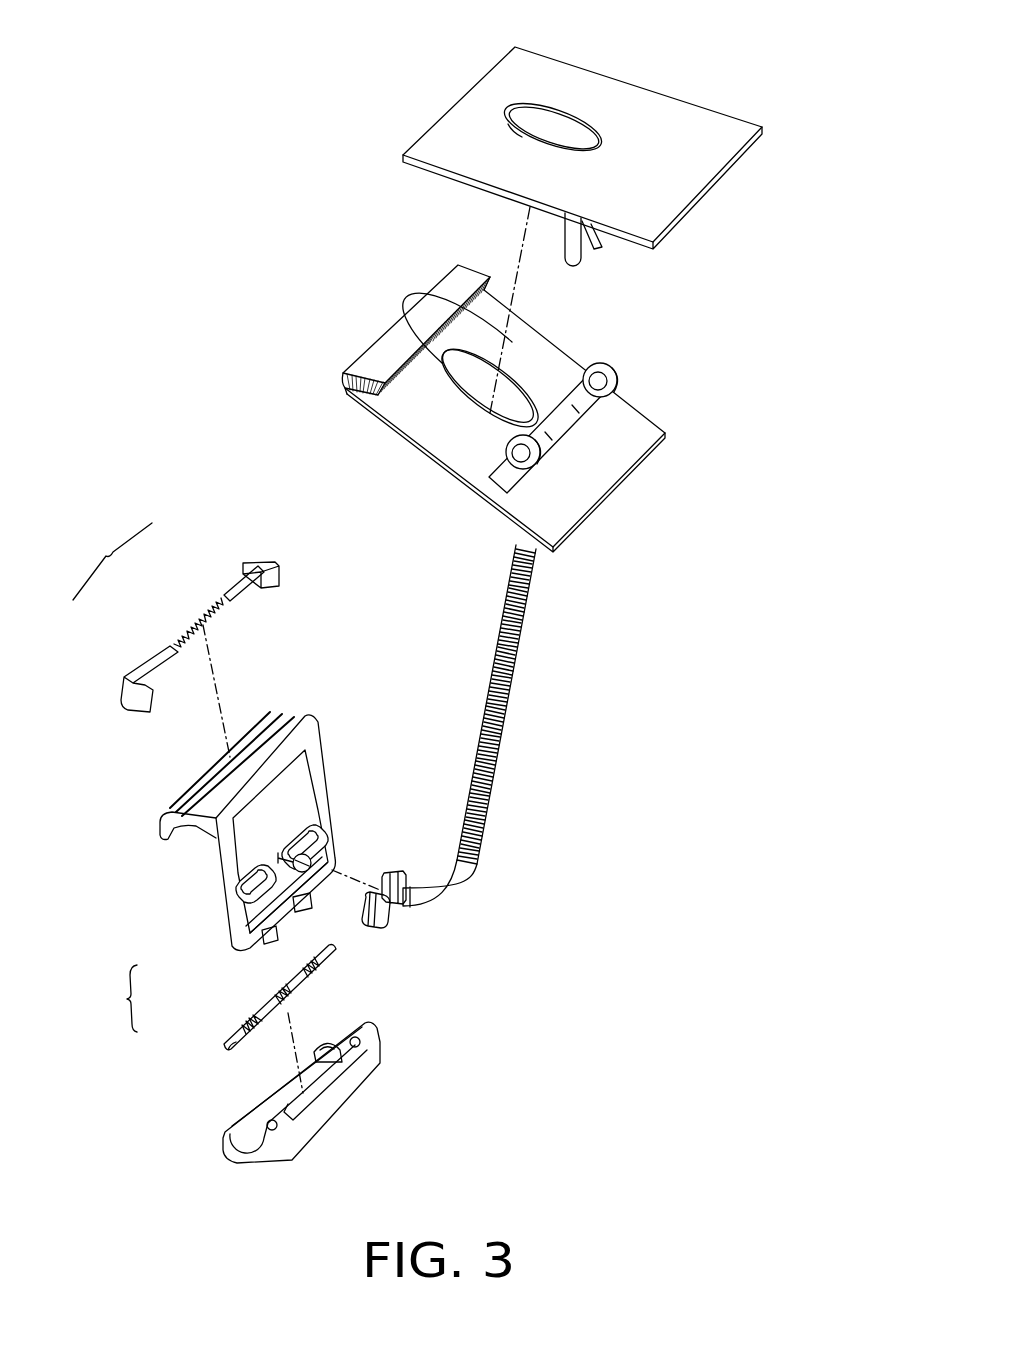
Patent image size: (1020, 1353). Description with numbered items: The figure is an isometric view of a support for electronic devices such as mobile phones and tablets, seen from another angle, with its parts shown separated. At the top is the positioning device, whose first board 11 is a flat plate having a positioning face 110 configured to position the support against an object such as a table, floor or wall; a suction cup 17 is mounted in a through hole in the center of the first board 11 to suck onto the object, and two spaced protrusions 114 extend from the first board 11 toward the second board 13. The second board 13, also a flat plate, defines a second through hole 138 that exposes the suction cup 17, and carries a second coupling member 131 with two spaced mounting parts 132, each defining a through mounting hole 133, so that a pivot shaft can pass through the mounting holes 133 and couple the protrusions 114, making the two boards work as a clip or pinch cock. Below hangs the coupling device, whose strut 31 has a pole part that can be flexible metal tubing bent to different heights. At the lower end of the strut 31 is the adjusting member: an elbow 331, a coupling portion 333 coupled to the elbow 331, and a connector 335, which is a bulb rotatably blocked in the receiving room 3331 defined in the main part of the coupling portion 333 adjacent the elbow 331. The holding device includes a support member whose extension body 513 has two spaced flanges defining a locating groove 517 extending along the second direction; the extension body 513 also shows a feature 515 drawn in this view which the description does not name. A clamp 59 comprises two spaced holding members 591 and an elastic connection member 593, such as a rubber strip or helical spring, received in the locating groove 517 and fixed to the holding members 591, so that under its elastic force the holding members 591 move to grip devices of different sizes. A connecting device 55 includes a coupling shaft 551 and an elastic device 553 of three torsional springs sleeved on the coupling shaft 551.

The first board 11 is at (727, 165).
The positioning face 110 is at (680, 115).
The suction cup 17 is at (565, 125).
The protrusions 114 is at (580, 250).
The second board 13 is at (620, 448).
The second through hole 138 is at (507, 397).
The second coupling member 131 is at (582, 417).
The mounting parts 132 is at (613, 367).
The mounting hole 133 is at (507, 450).
The strut 31 is at (513, 657).
The elbow 331 is at (458, 880).
The receiving room 3331 is at (398, 905).
The coupling portion 333 is at (372, 917).
The clamp 59 is at (173, 617).
The holding members 591 is at (235, 582).
The connection member 593 is at (203, 623).
The extension body 513 is at (178, 810).
The mounting bracket grooves 515 is at (283, 830).
The locating groove 517 is at (170, 840).
The connector 335 is at (307, 860).
The connecting device 55 is at (211, 998).
The coupling shaft 551 is at (233, 1037).
The elastic device 553 is at (257, 1010).